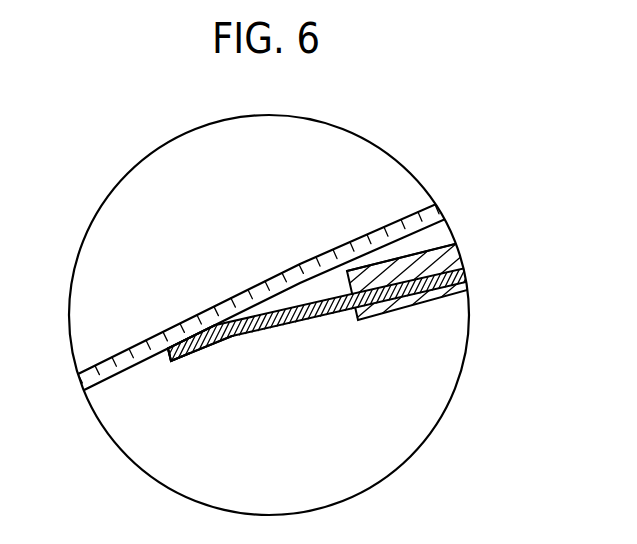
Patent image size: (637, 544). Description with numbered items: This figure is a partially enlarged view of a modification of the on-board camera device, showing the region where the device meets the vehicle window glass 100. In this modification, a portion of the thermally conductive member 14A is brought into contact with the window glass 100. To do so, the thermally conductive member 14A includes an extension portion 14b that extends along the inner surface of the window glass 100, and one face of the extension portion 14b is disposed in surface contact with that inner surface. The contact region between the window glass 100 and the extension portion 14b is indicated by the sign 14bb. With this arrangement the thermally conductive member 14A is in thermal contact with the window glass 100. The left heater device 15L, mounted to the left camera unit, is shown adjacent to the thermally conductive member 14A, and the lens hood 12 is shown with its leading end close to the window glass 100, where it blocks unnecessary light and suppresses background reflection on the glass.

The window glass 100 is at (318, 264).
The lens hood 12 is at (385, 268).
The thermally conductive member 14A is at (270, 316).
The extension portion 14b is at (193, 357).
The contact region 14bb is at (188, 345).
The left heater device 15L is at (378, 316).